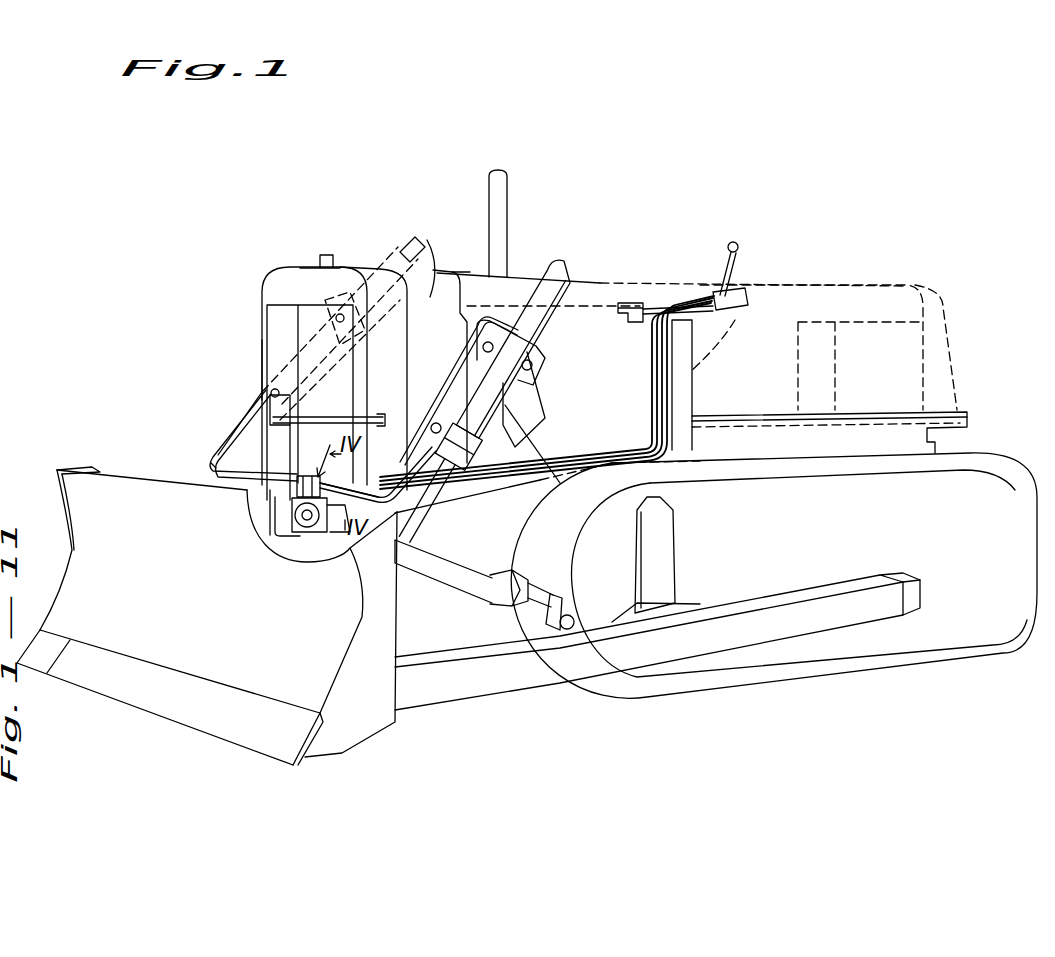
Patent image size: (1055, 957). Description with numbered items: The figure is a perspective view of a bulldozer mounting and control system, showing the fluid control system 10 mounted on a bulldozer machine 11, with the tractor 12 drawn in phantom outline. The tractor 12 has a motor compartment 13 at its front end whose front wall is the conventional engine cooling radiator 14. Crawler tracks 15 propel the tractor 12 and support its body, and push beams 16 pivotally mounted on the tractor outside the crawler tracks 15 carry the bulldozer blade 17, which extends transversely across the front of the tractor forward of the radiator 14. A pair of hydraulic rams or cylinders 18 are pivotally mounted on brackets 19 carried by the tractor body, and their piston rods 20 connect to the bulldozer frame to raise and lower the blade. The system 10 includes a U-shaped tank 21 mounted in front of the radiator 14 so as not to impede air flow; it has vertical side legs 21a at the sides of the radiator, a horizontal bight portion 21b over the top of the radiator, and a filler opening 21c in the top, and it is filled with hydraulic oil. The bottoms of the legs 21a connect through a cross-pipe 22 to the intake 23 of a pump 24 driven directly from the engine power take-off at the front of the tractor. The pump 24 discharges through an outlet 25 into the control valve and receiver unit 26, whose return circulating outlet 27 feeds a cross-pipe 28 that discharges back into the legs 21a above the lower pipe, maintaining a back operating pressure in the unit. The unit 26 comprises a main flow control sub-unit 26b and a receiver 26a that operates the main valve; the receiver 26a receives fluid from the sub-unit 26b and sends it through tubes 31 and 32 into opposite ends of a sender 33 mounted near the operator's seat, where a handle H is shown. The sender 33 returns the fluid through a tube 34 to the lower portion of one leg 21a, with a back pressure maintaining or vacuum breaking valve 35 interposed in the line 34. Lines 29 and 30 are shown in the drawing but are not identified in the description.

The fluid control system 10 is at (325, 452).
The bulldozer machine 11 is at (606, 280).
The tractor 12 is at (767, 325).
The motor compartment 13 is at (475, 292).
The engine cooling radiator 14 is at (420, 246).
The crawler tracks 15 is at (783, 475).
The push beams 16 is at (757, 605).
The bulldozer blade 17 is at (214, 633).
The hydraulic rams or cylinders 18 is at (553, 318).
The brackets 19 is at (527, 400).
The piston rods 20 is at (248, 458).
The U-shaped tank 21 is at (292, 280).
The vertical side legs 21a is at (262, 345).
The horizontal bight portion 21b is at (335, 276).
The filler opening 21c is at (320, 258).
The cross-pipe 22 is at (300, 540).
The intake 23 is at (275, 522).
The pump 24 is at (300, 542).
The outlet 25 is at (332, 540).
The control valve and receiver unit 26 is at (263, 490).
The receiver 26a is at (272, 513).
The main flow control sub-unit 26b is at (343, 470).
The return circulating outlet 27 is at (283, 444).
The cross-pipe 28 is at (330, 420).
The hose 29 is at (245, 417).
The hose fitting 30 is at (215, 466).
The tube 31 is at (652, 400).
The tube 32 is at (668, 386).
The sender 33 is at (750, 289).
The tube 34 is at (682, 312).
The back pressure maintaining or vacuum breaking valve 35 is at (632, 303).
The control handle H is at (738, 243).